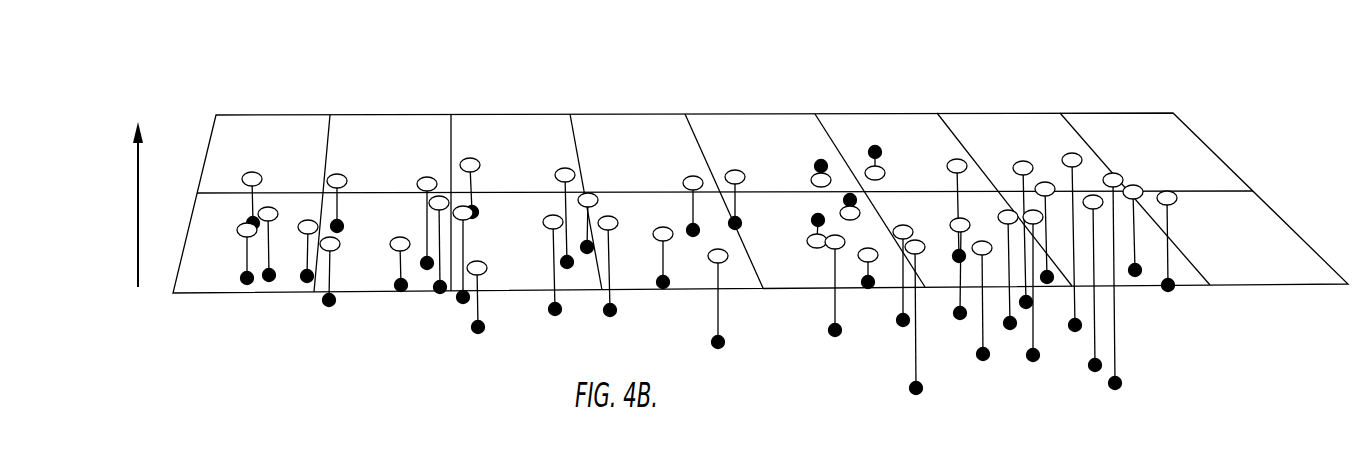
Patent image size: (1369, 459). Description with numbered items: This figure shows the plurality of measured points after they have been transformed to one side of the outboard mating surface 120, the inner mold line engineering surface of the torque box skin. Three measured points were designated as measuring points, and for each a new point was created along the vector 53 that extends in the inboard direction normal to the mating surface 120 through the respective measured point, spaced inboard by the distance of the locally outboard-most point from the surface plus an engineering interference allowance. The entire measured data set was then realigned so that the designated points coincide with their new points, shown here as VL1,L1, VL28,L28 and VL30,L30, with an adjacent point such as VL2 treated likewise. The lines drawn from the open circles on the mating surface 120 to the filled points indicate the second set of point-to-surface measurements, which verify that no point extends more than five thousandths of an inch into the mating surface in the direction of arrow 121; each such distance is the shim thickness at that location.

The outboard mating surface 120 is at (1160, 140).
The arrow 121 is at (140, 170).
The vector 53 is at (270, 237).
The new point VL2 is at (249, 285).
The new point and designated measuring point VL1,L1 is at (269, 283).
The new point and designated measuring point VL28,L28 is at (835, 340).
The new point and designated measuring point VL30,L30 is at (1168, 292).